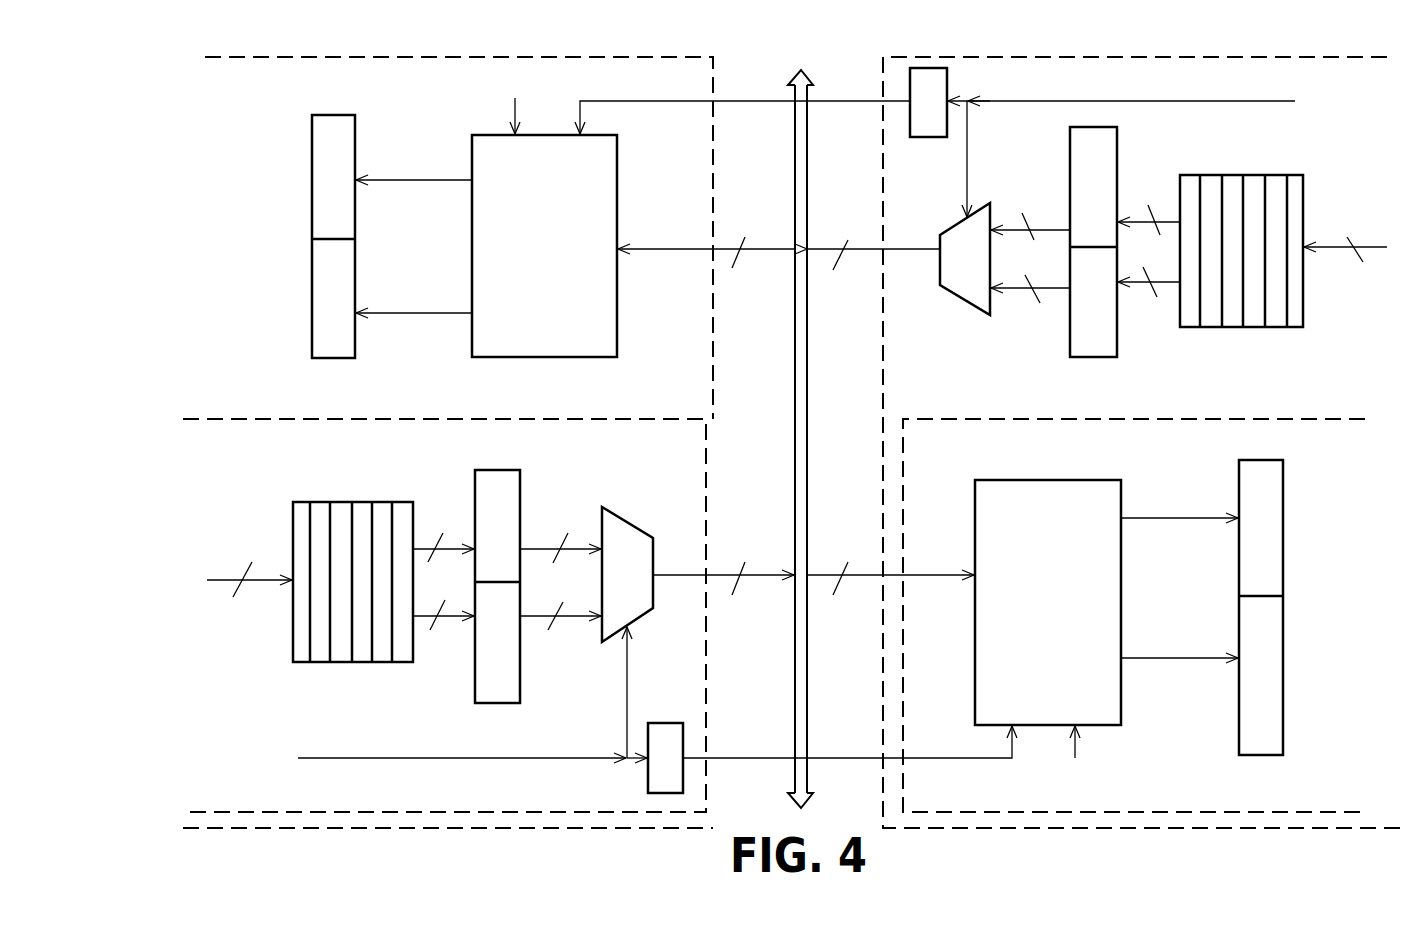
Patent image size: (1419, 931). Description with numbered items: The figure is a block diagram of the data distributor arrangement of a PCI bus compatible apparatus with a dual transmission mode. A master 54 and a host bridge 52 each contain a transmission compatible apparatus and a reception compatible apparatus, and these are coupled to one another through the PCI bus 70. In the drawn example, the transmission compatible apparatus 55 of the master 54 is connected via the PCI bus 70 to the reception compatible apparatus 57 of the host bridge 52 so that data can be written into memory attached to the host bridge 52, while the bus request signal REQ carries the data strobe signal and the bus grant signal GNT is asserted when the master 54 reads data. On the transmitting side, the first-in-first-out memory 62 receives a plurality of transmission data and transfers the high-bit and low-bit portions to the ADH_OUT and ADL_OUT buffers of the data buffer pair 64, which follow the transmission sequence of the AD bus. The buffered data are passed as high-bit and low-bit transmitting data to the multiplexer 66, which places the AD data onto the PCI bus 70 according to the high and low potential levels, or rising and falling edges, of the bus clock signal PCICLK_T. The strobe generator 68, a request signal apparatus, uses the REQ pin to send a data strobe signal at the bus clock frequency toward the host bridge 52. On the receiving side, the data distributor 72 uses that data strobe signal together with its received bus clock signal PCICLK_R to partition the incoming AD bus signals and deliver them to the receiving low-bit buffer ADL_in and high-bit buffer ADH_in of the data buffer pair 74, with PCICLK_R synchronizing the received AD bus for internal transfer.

The host bridge 52 is at (1387, 827).
The master 54 is at (266, 57).
The transmission compatible apparatus 55 is at (253, 419).
The reception compatible apparatus 57 is at (1185, 420).
The first-in-first-out (FIFO) memory 62 is at (288, 663).
The data buffer pair 64 is at (475, 663).
The multiplexer 66 is at (655, 597).
The strobe generator 68 is at (663, 797).
The PCI bus 70 is at (805, 215).
The data distributor 72 is at (1038, 480).
The data buffer pair 74 is at (1285, 492).